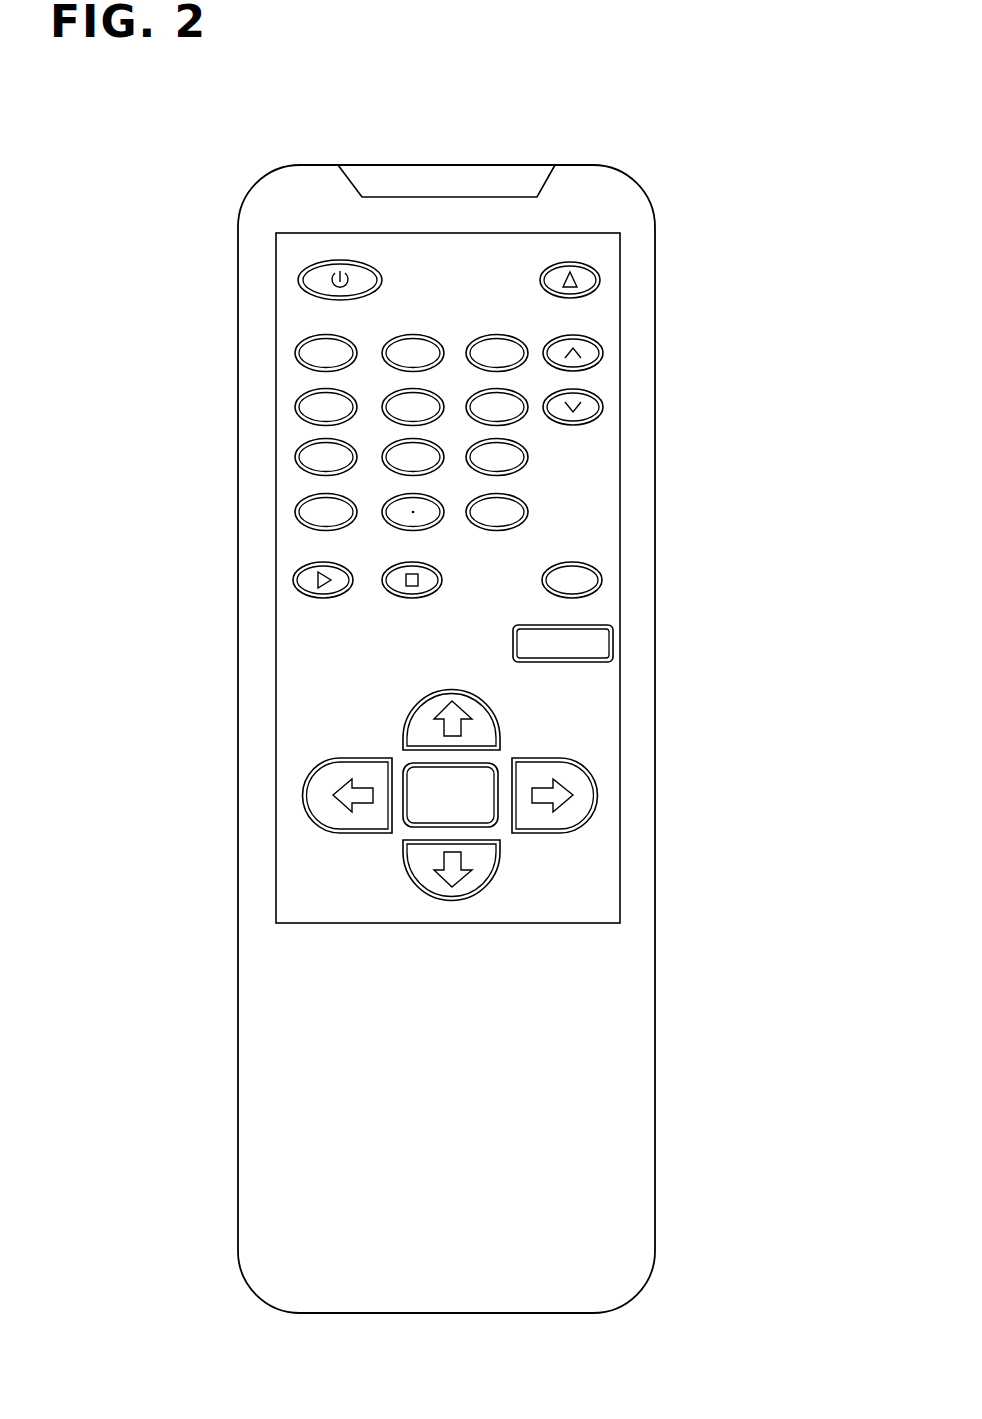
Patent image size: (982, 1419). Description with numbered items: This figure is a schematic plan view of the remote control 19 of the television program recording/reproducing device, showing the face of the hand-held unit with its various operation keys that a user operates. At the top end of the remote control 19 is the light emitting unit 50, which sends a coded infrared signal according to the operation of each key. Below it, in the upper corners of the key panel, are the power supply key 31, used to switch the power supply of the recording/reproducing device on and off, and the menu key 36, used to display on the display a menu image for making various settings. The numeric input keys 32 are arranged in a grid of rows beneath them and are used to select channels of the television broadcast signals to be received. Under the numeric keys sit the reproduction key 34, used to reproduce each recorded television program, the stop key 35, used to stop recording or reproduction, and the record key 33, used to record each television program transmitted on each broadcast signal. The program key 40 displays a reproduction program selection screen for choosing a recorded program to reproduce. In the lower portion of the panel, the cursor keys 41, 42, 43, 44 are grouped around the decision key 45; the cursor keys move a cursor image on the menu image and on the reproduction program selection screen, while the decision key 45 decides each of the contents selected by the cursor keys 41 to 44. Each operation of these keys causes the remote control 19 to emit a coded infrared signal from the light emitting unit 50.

The remote control 19 is at (475, 32).
The light emitting unit 50 is at (467, 173).
The power supply key 31 is at (325, 275).
The menu key 36 is at (578, 280).
The numeric input keys 32 is at (300, 322).
The reproduction key 34 is at (303, 573).
The stop key 35 is at (393, 587).
The record key 33 is at (587, 573).
The program key 40 is at (597, 658).
The cursor key 41 is at (433, 723).
The cursor key 42 is at (477, 877).
The cursor key 43 is at (333, 798).
The cursor key 44 is at (572, 808).
The decision key 45 is at (420, 813).